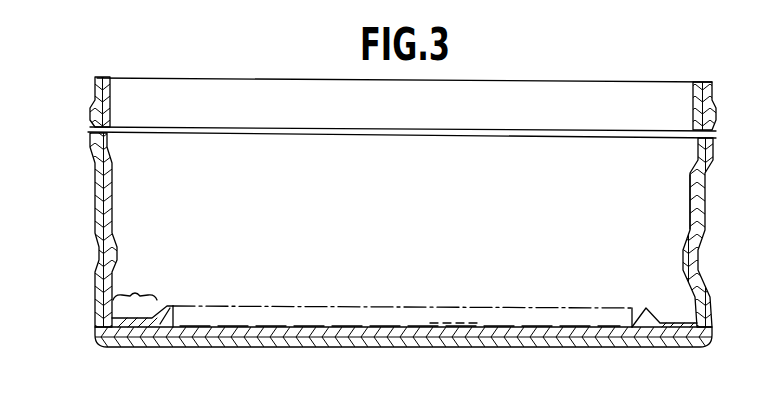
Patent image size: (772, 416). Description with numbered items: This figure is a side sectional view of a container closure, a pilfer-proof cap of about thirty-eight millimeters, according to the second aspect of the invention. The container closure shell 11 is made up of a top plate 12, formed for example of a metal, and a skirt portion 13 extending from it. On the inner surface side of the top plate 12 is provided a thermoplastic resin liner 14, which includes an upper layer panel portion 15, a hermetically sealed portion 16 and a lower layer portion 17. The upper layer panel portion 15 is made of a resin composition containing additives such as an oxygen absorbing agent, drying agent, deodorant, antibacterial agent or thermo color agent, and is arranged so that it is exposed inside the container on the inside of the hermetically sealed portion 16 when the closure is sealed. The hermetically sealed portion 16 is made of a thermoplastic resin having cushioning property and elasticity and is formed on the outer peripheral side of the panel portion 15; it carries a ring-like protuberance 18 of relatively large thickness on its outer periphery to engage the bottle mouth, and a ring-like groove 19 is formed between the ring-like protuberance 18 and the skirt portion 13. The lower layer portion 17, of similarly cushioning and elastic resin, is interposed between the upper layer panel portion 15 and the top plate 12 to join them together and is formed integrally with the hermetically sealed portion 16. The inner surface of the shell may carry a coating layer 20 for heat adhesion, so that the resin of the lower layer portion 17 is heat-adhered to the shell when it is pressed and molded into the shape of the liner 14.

The container closure shell 11 is at (254, 359).
The top plate 12 is at (541, 351).
The skirt portion 13 is at (91, 237).
The thermoplastic resin liner 14 is at (222, 289).
The upper layer panel portion 15 is at (417, 320).
The hermetically sealed portion 16 is at (141, 283).
The lower layer portion 17 is at (454, 323).
The ring-like protuberance 18 is at (640, 303).
The ring-like groove 19 is at (676, 322).
The coating layer 20 is at (687, 230).